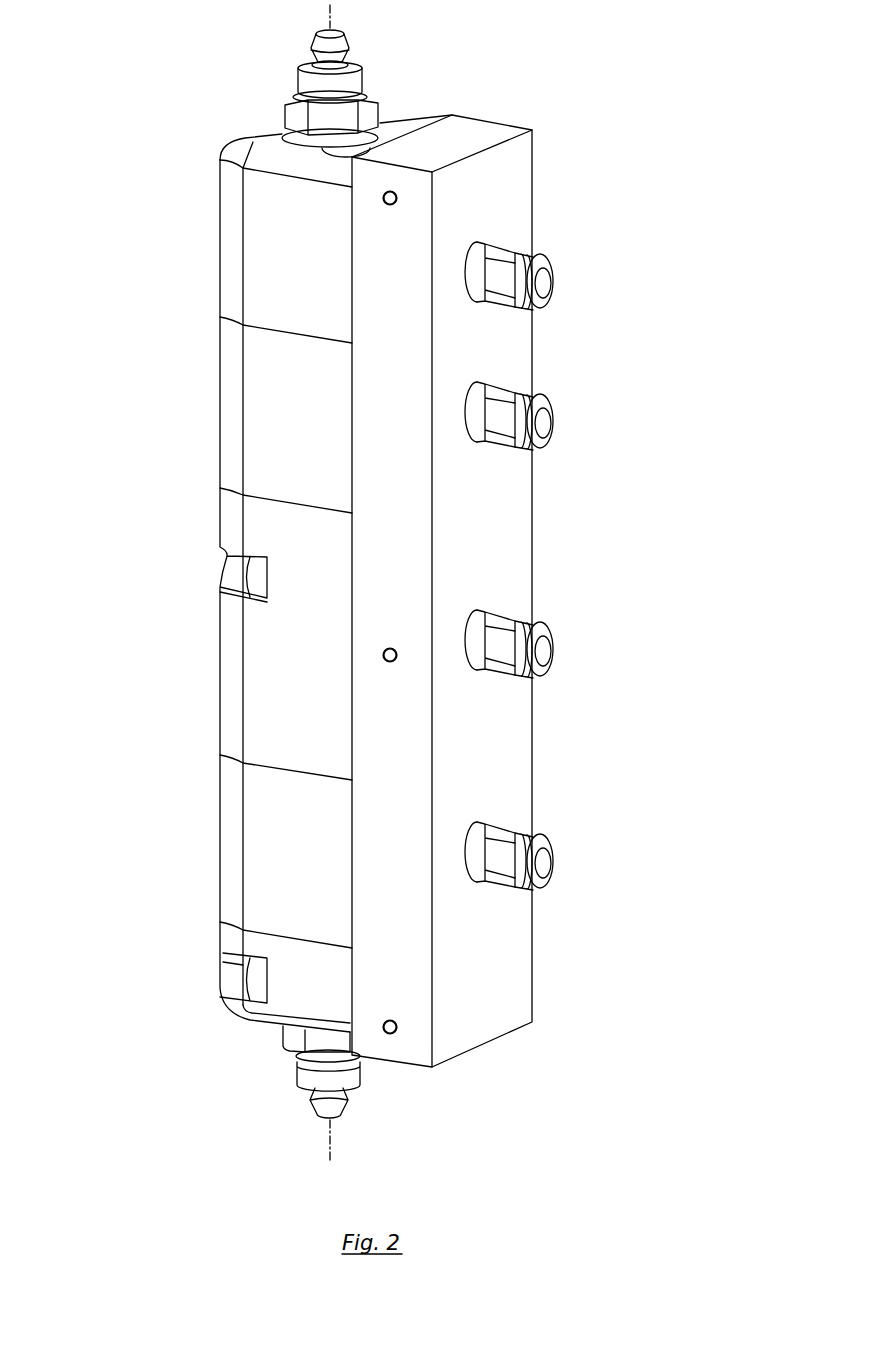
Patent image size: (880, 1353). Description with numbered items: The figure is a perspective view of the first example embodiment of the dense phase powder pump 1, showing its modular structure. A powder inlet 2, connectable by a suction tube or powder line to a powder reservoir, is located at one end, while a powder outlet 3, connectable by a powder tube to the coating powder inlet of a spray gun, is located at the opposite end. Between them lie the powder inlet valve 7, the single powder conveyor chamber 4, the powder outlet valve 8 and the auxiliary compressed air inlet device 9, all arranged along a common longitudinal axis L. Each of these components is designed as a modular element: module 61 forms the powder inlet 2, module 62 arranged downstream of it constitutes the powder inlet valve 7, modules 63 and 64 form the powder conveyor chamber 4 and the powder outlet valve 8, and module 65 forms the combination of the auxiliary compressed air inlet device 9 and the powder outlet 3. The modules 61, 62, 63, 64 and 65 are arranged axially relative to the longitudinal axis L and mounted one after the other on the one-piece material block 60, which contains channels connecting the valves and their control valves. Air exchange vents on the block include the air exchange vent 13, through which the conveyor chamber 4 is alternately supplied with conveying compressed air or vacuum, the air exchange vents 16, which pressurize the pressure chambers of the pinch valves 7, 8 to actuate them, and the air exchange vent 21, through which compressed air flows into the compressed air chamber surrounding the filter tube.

The dense phase powder pump 1 is at (540, 56).
The powder inlet 2 is at (358, 1088).
The powder outlet 3 is at (90, 62).
The powder conveyor chamber 4 is at (90, 490).
The powder inlet valve 7 is at (90, 762).
The powder outlet valve 8 is at (90, 337).
The auxiliary compressed air inlet device 9 is at (90, 217).
The air exchange vent 13 is at (537, 653).
The air exchange vent 16 is at (537, 425).
The air exchange vent 21 is at (537, 285).
The material block 60 is at (492, 767).
The module 61 is at (205, 974).
The module 62 is at (205, 845).
The module 63 is at (205, 662).
The module 64 is at (205, 393).
The module 65 is at (205, 266).
The longitudinal axis L is at (205, 1142).